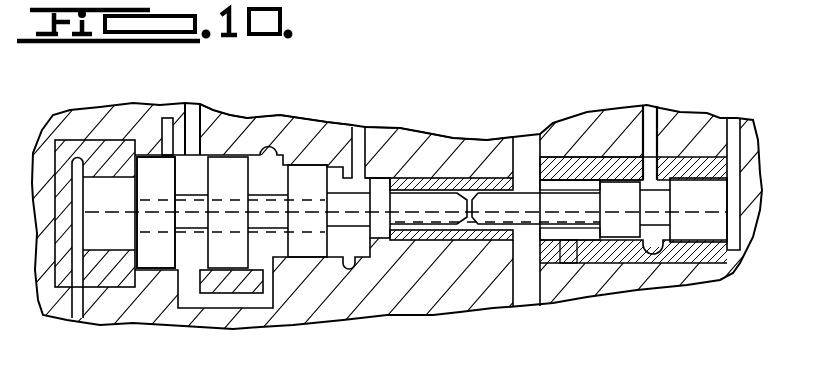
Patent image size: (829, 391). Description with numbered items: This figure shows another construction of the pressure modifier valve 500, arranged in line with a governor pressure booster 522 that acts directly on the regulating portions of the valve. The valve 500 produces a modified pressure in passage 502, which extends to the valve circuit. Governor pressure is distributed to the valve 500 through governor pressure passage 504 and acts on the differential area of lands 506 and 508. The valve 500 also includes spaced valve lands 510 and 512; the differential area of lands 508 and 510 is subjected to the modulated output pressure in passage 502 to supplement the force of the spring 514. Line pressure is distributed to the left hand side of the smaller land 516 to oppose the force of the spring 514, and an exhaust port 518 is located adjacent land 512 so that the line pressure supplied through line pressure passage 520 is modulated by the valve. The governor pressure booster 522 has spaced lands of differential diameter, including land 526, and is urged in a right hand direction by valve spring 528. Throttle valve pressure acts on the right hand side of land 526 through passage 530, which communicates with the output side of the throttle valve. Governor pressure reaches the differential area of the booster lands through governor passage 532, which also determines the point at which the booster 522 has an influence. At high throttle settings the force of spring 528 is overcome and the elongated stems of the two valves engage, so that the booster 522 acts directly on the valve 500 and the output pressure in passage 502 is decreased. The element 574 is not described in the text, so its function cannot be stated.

The pressure modifier valve 500 is at (273, 186).
The passage 502 is at (197, 110).
The governor pressure passage 504 is at (383, 126).
The land 506 is at (380, 245).
The land 508 is at (310, 262).
The valve land 510 is at (230, 295).
The valve land 512 is at (167, 282).
The spring 514 is at (437, 140).
The smaller land 516 is at (117, 283).
The exhaust port 518 is at (172, 130).
The line pressure passage 520 is at (224, 122).
The governor pressure booster 522 is at (668, 218).
The land 526 is at (694, 172).
The valve spring 528 is at (597, 240).
The passage 530 is at (739, 250).
The governor passage 532 is at (655, 104).
The sleeve 574 is at (617, 187).